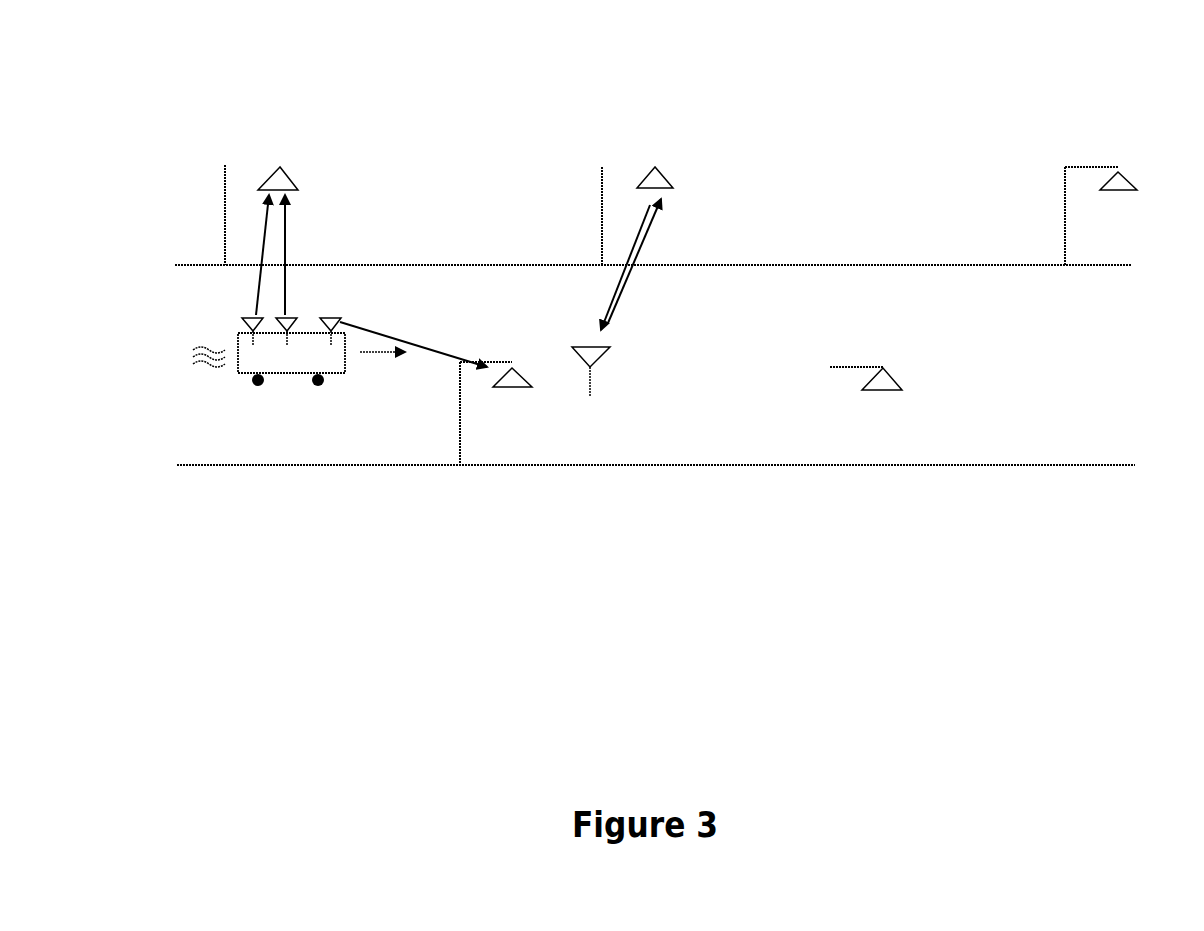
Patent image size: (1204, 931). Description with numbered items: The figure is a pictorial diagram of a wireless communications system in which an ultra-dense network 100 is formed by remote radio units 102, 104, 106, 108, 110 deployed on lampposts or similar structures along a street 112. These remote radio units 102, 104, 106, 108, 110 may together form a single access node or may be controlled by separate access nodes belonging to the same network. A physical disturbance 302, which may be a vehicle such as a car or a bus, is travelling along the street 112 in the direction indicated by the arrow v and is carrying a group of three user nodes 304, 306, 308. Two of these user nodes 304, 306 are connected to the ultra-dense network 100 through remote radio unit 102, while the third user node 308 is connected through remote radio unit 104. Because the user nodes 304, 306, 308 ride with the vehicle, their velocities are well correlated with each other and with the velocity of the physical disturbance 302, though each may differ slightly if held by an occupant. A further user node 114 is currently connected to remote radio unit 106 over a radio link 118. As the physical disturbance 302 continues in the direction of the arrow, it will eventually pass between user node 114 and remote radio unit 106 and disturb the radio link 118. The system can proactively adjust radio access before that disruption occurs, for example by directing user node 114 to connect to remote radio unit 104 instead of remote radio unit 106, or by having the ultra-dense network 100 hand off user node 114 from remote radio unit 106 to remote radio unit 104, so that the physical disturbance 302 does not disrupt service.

The ultra-dense network 100 is at (915, 82).
The remote radio unit 102 is at (288, 179).
The remote radio unit 104 is at (513, 368).
The remote radio unit 106 is at (665, 180).
The remote radio unit 108 is at (887, 375).
The remote radio unit 110 is at (1122, 179).
The street 112 is at (1037, 364).
The user node 114 is at (600, 357).
The radio link 118 is at (645, 279).
The physical disturbance 302 is at (277, 373).
The user node 304 is at (250, 318).
The user node 306 is at (290, 318).
The user node 308 is at (335, 318).